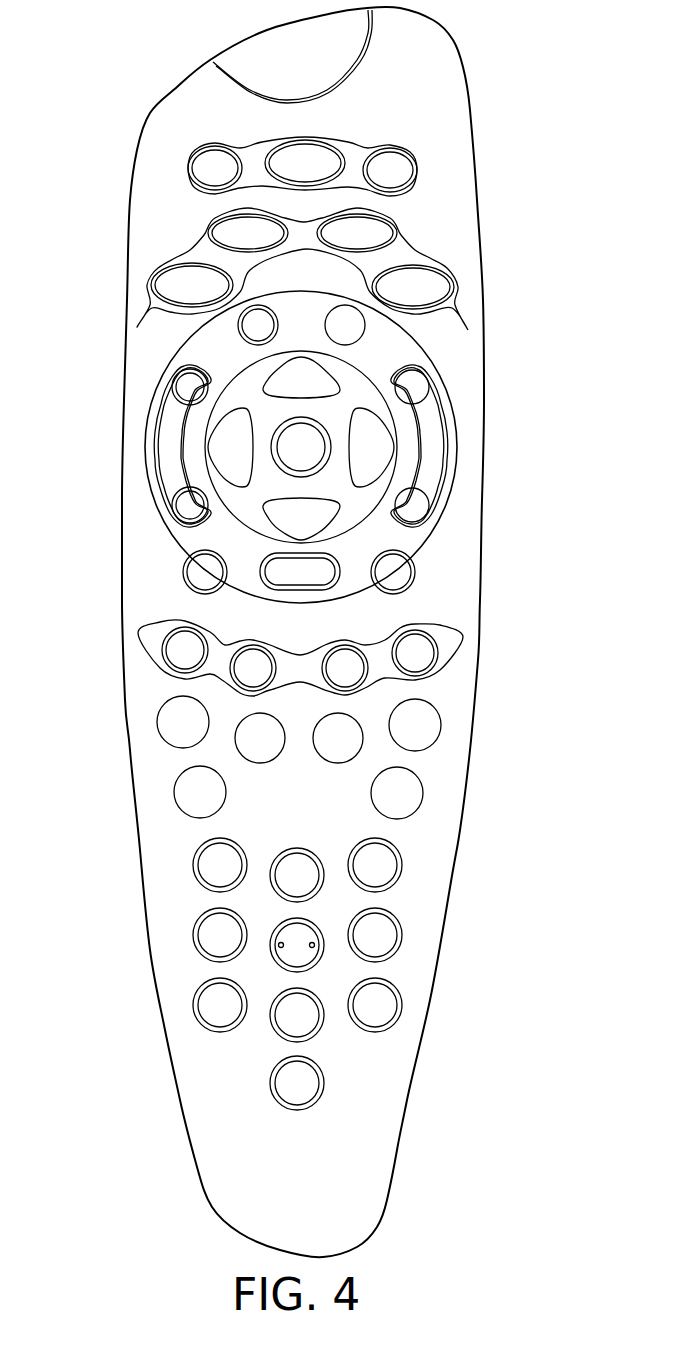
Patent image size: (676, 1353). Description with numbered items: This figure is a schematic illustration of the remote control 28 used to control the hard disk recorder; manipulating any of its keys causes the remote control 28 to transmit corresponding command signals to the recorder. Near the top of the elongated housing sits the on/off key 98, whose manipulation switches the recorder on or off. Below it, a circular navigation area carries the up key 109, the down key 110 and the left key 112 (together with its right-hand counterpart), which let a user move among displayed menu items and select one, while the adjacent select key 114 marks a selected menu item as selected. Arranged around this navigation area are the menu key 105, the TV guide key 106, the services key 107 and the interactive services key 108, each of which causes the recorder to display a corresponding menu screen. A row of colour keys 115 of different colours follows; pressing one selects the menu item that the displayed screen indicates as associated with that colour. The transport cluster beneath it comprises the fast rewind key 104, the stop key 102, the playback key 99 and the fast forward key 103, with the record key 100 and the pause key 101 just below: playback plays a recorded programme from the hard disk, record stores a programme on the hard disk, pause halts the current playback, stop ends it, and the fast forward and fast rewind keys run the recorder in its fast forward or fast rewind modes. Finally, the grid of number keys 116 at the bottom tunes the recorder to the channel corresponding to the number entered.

The remote control 28 is at (143, 1057).
The on/off key 98 is at (317, 157).
The playback key 99 is at (348, 753).
The record key 100 is at (215, 810).
The pause key 101 is at (407, 812).
The stop key 102 is at (253, 752).
The fast forward key 103 is at (427, 737).
The fast rewind key 104 is at (172, 735).
The menu key 105 is at (355, 333).
The TV guide key 106 is at (417, 393).
The services key 107 is at (253, 333).
The interactive services key 108 is at (187, 390).
The up key 109 is at (327, 392).
The down key 110 is at (277, 517).
The left key 112 is at (225, 467).
The select key 114 is at (303, 583).
The colour keys 115 is at (448, 677).
The number keys 116 is at (365, 1058).